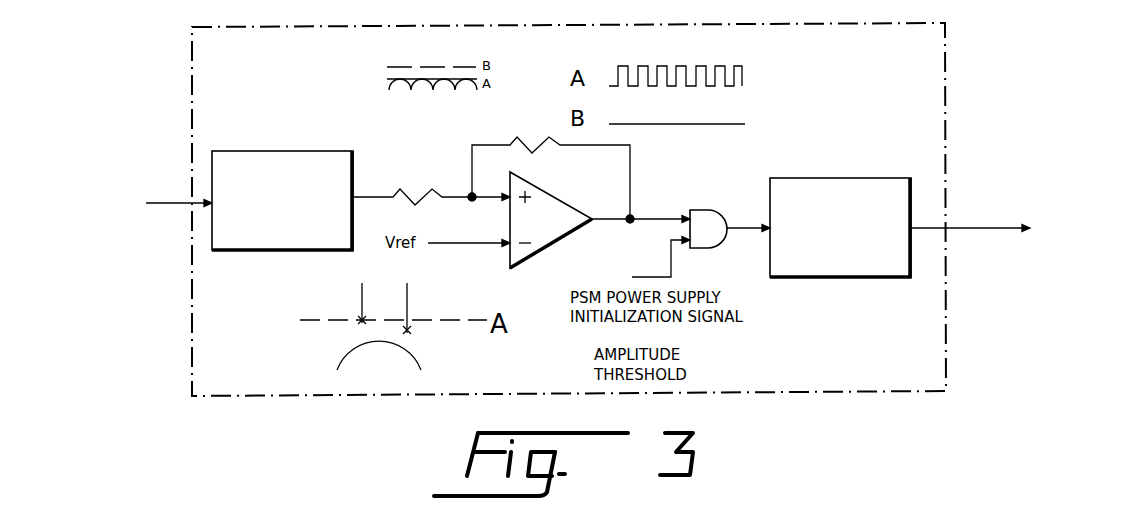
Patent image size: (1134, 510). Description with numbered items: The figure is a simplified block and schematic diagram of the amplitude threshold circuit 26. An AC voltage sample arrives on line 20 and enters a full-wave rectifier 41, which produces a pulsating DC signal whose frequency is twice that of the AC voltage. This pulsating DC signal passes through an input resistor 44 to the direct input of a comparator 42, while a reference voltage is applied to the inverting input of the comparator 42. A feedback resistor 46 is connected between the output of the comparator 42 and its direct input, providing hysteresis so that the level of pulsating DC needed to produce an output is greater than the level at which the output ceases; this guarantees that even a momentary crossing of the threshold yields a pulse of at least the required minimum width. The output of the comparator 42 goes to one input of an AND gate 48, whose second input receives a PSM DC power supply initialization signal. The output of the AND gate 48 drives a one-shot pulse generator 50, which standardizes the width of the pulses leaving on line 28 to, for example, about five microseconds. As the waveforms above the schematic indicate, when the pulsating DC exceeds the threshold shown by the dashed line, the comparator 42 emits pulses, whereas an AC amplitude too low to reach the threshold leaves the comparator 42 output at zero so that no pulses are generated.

The line 20 is at (178, 203).
The amplitude threshold circuit 26 is at (946, 107).
The line 28 is at (982, 228).
The full-wave rectifier 41 is at (262, 150).
The comparator 42 is at (520, 259).
The input resistor 44 is at (425, 190).
The feedback resistor 46 is at (538, 150).
The AND gate 48 is at (705, 210).
The one-shot pulse generator 50 is at (843, 178).